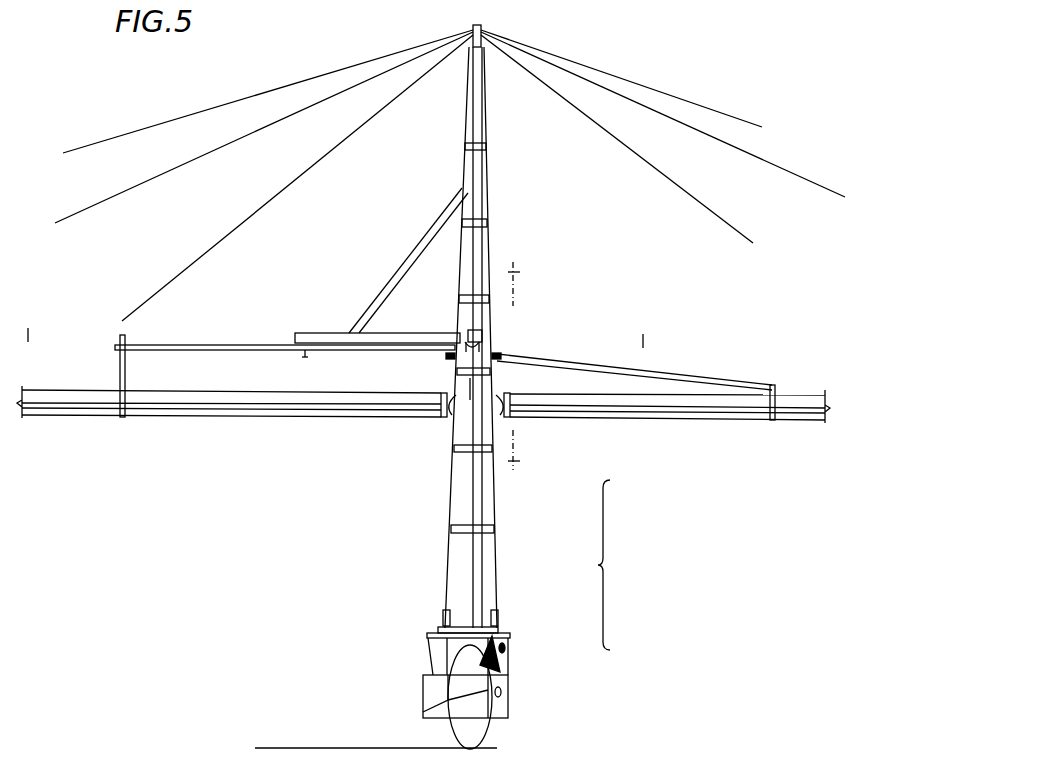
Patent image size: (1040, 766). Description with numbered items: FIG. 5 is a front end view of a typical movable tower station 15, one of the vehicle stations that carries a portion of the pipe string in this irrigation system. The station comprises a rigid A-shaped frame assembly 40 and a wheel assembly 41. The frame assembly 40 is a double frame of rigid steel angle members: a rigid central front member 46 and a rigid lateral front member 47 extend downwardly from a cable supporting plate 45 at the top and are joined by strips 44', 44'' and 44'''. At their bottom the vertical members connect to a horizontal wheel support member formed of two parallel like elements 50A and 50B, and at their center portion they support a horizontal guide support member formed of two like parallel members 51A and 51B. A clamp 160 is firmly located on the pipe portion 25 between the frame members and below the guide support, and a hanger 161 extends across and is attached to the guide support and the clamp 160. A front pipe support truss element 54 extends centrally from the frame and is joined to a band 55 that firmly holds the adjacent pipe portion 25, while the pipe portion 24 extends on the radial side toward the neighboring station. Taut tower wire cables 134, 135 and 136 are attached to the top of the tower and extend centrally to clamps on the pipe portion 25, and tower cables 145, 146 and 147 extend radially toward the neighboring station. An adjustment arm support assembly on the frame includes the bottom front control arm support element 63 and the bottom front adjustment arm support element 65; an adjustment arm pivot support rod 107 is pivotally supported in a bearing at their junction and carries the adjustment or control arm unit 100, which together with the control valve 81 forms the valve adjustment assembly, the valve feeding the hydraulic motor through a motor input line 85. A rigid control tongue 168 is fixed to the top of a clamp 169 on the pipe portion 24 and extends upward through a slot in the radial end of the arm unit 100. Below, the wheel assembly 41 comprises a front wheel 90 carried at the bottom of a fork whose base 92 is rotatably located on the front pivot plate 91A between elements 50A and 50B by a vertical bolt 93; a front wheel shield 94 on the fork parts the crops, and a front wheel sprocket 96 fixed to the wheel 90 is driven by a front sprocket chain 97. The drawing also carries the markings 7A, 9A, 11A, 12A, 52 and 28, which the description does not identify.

The movable tower station 15 is at (497, 263).
The cable supporting plate 45 is at (472, 30).
The section indicator 7A is at (505, 233).
The strip 44''' is at (450, 149).
The strip 44'' is at (448, 453).
The strip 44' is at (451, 527).
The guide support member element 51A is at (455, 360).
The guide support member element 51B is at (495, 357).
The pivot block 52 is at (487, 330).
The control valve 81 is at (468, 336).
The hanger 161 is at (475, 389).
The clamp 160 is at (460, 426).
The section line 12A is at (537, 367).
The rigid central front member 46 is at (492, 492).
The rigid lateral front member 47 is at (452, 495).
The motor input line 85 is at (482, 508).
The rigid A-shaped frame assembly 40 is at (498, 533).
The section indicator 9A is at (618, 565).
The bottom front control arm support element 63 is at (395, 280).
The bottom front adjustment arm support element 65 is at (410, 333).
The adjustment or control arm unit 100 is at (231, 338).
The adjustment arm pivot support rod 107 is at (305, 357).
The rigid control tongue 168 is at (120, 380).
The clamp 169 is at (124, 408).
The pipe portion 24 is at (68, 390).
The pipe portion 25 is at (798, 394).
The front pipe support truss element 54 is at (695, 372).
The band 55 is at (775, 418).
The section line 11A is at (337, 326).
The tower cable 145 is at (352, 70).
The tower cable 146 is at (298, 118).
The tower cable 147 is at (322, 170).
The taut tower wire cable 136 is at (726, 112).
The taut tower wire cable 135 is at (768, 160).
The taut tower wire cable 134 is at (696, 203).
The wheel support member element 50A is at (446, 614).
The wheel support member element 50B is at (500, 615).
The front wheel fork base bolt 93 is at (440, 627).
The front wheel fork base 92 is at (495, 640).
The front pivot plate 91A is at (477, 628).
The front wheel shield 94 is at (505, 686).
The front sprocket chain 97 is at (505, 658).
The front wheel 90 is at (482, 742).
The front wheel sprocket 96 is at (494, 720).
The wheel assembly 41 is at (422, 700).
The ground line 28 is at (278, 748).